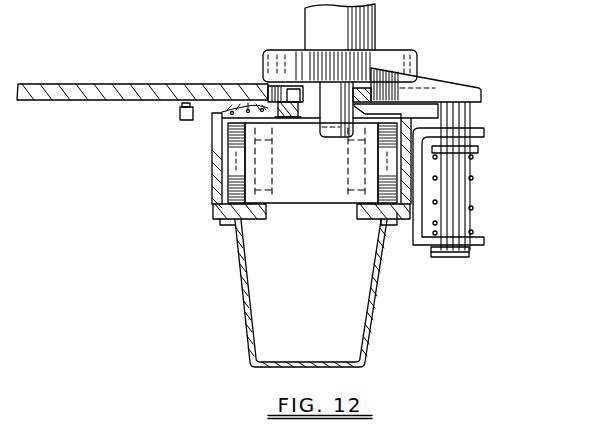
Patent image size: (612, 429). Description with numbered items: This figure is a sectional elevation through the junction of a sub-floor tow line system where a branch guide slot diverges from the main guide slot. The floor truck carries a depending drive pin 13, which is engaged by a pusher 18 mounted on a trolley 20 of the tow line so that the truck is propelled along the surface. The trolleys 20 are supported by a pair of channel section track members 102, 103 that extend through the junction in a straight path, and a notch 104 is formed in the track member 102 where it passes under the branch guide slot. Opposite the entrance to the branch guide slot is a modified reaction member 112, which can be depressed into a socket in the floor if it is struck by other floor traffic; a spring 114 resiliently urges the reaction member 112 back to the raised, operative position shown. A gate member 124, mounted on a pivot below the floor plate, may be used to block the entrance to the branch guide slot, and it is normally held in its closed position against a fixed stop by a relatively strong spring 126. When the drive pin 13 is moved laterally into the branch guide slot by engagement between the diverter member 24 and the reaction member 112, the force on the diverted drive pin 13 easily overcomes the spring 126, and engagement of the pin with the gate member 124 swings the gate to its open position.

The drive pin 13 is at (333, 128).
The pusher 18 is at (327, 193).
The trolley 20 is at (238, 163).
The diverter member 24 is at (406, 50).
The track member 102 is at (213, 210).
The track member 103 is at (404, 218).
The notch 104 is at (217, 137).
The reaction member 112 is at (463, 82).
The spring 114 is at (471, 167).
The gate member 124 is at (277, 84).
The spring 126 is at (213, 115).